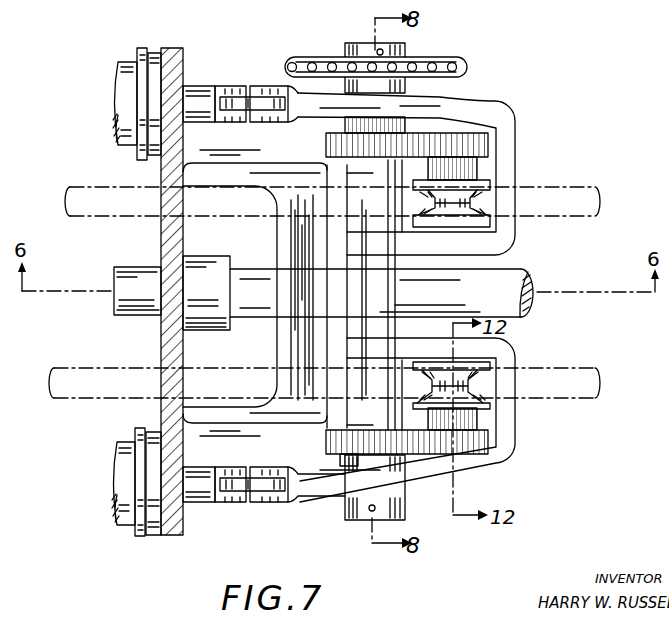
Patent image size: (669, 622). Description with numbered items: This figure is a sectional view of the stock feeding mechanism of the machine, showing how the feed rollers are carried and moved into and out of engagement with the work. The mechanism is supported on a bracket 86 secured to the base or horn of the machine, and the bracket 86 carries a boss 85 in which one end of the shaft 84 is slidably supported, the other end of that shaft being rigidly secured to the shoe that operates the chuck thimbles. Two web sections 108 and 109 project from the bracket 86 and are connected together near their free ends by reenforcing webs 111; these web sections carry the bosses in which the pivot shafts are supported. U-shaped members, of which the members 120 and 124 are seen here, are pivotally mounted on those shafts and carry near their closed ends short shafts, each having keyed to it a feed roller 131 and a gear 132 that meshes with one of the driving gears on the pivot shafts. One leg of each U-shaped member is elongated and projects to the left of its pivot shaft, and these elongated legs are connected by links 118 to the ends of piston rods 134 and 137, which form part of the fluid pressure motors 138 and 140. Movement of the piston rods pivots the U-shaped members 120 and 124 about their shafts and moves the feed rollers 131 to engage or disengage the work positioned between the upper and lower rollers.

The shaft 84 is at (498, 287).
The boss 85 is at (232, 243).
The bracket 86 is at (167, 353).
The web section 108 is at (255, 148).
The web section 109 is at (273, 420).
The reenforcing web 111 is at (290, 347).
The link 118 is at (258, 102).
The U-shaped member 120 is at (503, 465).
The U-shaped member 124 is at (453, 110).
The feed roller 131 is at (497, 188).
The gear 132 is at (480, 143).
The piston rod 134 is at (220, 502).
The piston rod 137 is at (220, 89).
The fluid pressure motor 138 is at (118, 530).
The fluid pressure motor 140 is at (127, 87).